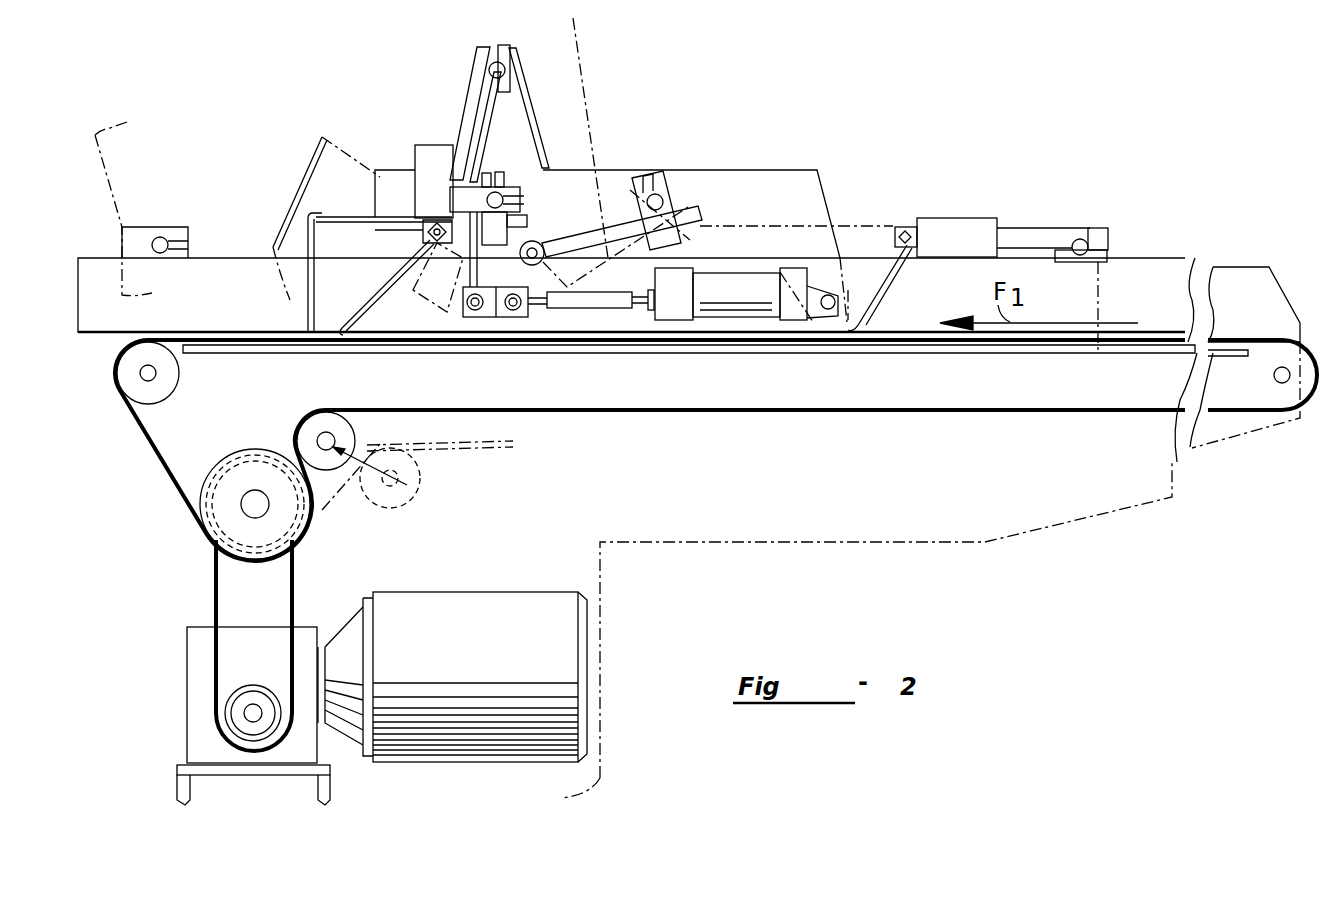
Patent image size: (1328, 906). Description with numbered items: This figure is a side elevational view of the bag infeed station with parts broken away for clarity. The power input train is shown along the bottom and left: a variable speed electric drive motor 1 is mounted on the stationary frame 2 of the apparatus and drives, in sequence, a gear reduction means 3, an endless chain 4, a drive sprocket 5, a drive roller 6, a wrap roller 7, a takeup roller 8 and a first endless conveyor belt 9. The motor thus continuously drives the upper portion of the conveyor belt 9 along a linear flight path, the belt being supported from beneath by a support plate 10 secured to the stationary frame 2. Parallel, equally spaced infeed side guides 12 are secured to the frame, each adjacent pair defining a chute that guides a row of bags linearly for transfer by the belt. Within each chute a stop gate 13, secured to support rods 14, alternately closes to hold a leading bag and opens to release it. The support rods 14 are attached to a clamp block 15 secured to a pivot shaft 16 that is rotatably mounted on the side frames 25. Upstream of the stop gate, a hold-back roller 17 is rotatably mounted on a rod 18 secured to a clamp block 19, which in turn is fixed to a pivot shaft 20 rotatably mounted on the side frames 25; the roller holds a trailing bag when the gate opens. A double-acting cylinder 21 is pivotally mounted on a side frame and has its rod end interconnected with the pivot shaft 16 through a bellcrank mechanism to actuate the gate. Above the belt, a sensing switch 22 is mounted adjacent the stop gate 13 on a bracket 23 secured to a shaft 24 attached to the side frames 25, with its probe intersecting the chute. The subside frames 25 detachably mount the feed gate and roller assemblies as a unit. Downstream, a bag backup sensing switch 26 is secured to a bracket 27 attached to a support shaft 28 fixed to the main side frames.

The variable speed electric drive motor 1 is at (482, 653).
The stationary frame 2 is at (1058, 526).
The gear reduction means 3 is at (262, 660).
The endless chain 4 is at (212, 577).
The drive sprocket 5 is at (283, 520).
The drive roller 6 is at (250, 452).
The wrap roller 7 is at (176, 374).
The takeup roller 8 is at (345, 435).
The first endless conveyor belt 9 is at (497, 410).
The support plate 10 is at (610, 352).
The infeed side guides 12 is at (1172, 272).
The stop gates 13 is at (307, 292).
The support rods 14 is at (362, 210).
The clamp block 15 is at (523, 200).
The pivot shaft 16 is at (504, 184).
The hold-back roller 17 is at (521, 259).
The rod 18 is at (615, 228).
The clamp block 19 is at (654, 178).
The pivot shaft 20 is at (683, 180).
The double-acting cylinder 21 is at (738, 303).
The sensing switch 22 is at (412, 153).
The bracket 23 is at (472, 101).
The shaft 24 is at (506, 66).
The side frames 25 is at (782, 207).
The bag backup sensing switches 26 is at (966, 252).
The bracket 27 is at (1040, 232).
The support shaft 28 is at (1083, 240).